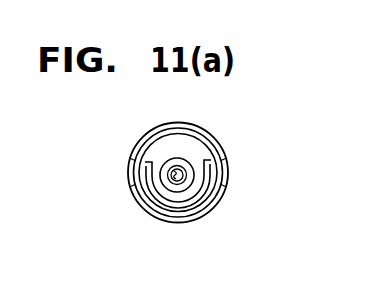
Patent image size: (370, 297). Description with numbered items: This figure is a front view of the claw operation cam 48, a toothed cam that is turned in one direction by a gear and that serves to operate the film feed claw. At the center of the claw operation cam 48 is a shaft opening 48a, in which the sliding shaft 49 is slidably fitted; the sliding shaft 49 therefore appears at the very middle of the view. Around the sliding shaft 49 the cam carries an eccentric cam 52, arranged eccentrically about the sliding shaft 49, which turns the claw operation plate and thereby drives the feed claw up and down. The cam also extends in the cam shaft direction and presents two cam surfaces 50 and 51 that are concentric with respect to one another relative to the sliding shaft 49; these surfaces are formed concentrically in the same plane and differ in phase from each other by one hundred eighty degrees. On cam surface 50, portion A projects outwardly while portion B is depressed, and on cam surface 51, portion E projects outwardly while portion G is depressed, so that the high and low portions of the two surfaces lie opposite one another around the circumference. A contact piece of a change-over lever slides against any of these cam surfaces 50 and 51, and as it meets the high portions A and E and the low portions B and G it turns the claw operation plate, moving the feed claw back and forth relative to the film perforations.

The projecting portion of cam surface 50 A is at (141, 137).
The depressed portion of cam surface 50 B is at (151, 212).
The depressed portion of cam surface 51 G is at (193, 140).
The projecting portion of cam surface 51 E is at (173, 212).
The claw operation cam 48 is at (190, 154).
The shaft opening 48a is at (168, 177).
The sliding shaft 49 is at (186, 175).
The cam surface 50 is at (215, 142).
The cam surface 51 is at (193, 210).
The eccentric cam 52 is at (205, 203).